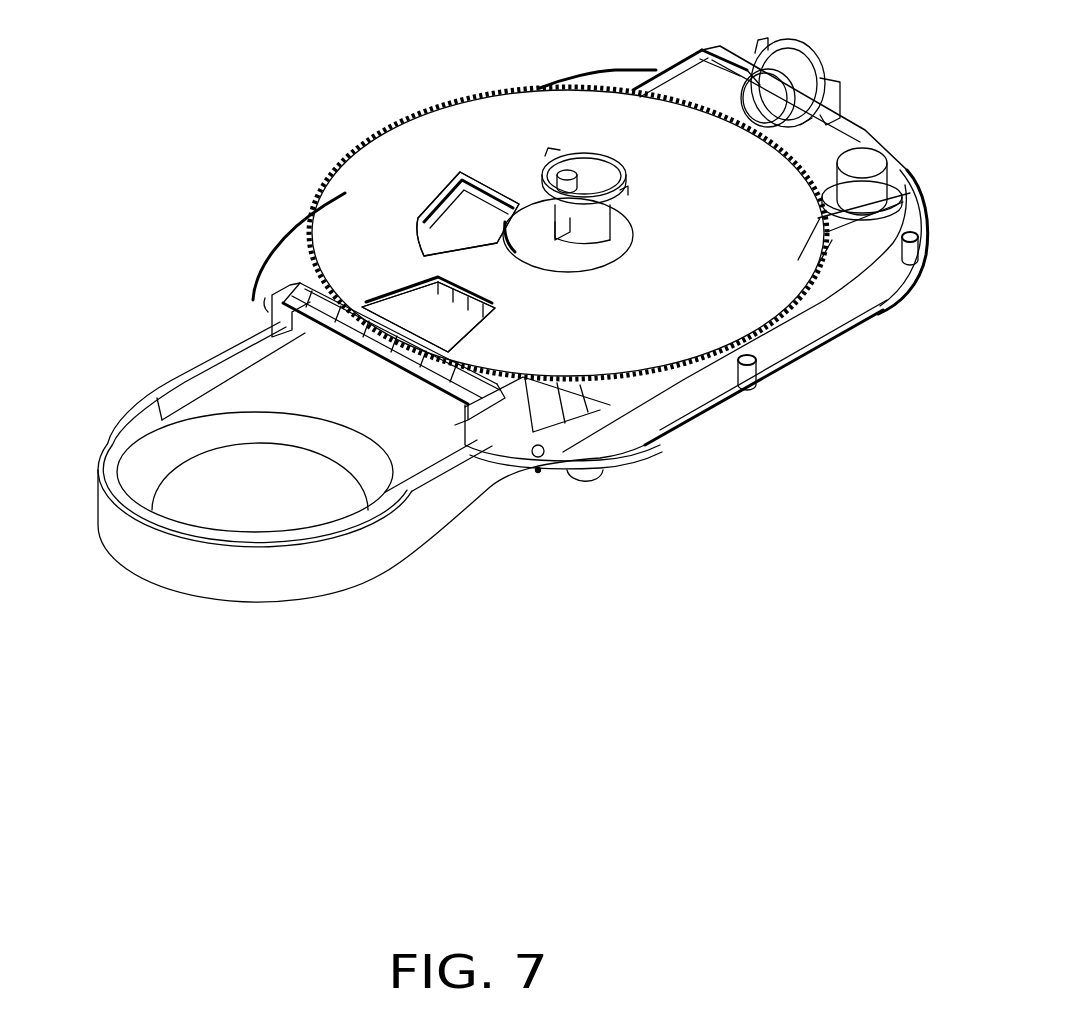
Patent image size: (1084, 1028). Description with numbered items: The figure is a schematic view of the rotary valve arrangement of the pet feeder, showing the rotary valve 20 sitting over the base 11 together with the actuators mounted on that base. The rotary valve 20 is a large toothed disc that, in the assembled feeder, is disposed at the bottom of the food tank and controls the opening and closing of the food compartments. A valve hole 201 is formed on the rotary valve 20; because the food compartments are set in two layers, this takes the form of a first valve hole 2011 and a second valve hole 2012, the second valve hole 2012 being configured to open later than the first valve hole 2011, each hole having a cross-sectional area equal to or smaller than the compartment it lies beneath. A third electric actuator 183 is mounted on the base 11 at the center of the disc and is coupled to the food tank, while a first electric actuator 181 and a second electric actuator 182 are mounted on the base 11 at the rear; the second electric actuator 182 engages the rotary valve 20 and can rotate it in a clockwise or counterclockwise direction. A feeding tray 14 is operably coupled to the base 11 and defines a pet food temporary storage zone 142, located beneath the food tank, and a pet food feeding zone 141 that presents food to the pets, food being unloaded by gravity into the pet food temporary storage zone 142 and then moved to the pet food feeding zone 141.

The base 11 is at (297, 262).
The feeding tray 14 is at (193, 379).
The pet food feeding zone 141 is at (203, 470).
The pet food temporary storage zone 142 is at (283, 367).
The rotary valve 20 is at (393, 155).
The valve hole 201 is at (207, 148).
The first valve hole 2011 is at (453, 230).
The second valve hole 2012 is at (414, 300).
The first electric actuator 181 is at (783, 57).
The second electric actuator 182 is at (862, 163).
The third electric actuator 183 is at (588, 163).